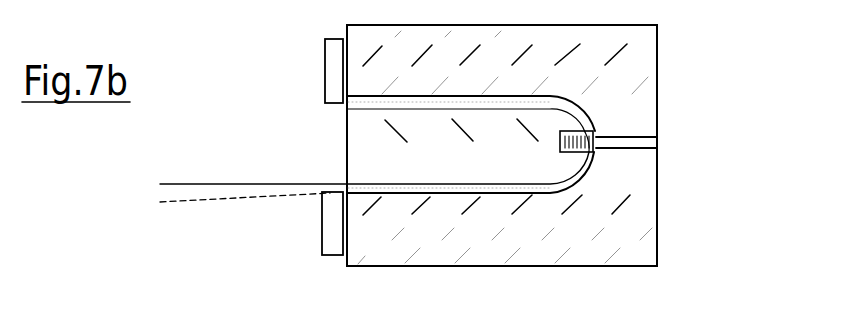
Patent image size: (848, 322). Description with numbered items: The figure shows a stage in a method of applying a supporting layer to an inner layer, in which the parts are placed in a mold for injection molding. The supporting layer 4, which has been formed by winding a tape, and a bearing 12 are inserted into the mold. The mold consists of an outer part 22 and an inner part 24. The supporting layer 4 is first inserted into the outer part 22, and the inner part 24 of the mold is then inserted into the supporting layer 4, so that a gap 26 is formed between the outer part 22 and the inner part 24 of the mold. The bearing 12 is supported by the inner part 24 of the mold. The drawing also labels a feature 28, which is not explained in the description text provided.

The supporting layer 4 is at (362, 203).
The bearing 12 is at (598, 130).
The outer part of the mold 22 is at (646, 247).
The inner part of the mold 24 is at (590, 165).
The gap 26 is at (328, 183).
The connection channel 28 is at (658, 141).